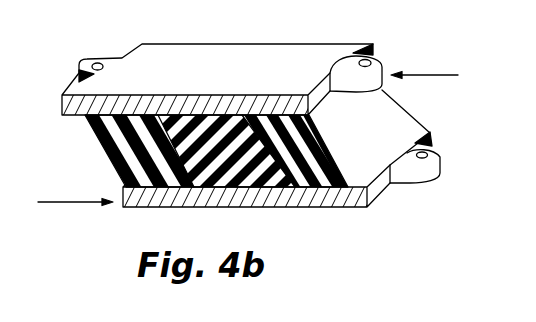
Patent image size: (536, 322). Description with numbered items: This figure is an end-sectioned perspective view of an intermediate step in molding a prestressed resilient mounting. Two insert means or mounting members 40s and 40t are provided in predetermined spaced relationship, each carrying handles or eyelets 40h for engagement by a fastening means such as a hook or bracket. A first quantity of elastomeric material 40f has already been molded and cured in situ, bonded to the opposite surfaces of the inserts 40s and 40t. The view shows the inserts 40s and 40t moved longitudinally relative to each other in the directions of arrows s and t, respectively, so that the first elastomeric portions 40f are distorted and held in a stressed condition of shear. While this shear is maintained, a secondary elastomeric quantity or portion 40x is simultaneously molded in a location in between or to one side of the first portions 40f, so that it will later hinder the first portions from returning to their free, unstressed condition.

The insert means 40t is at (268, 53).
The handles or eyelets 40h is at (82, 63).
The insert means 40s is at (143, 205).
The first quantities or portions of elastomeric material 40f is at (106, 135).
The secondary elastomeric quantity or portion 40x is at (244, 176).
The arrow t is at (458, 75).
The arrow s is at (62, 202).